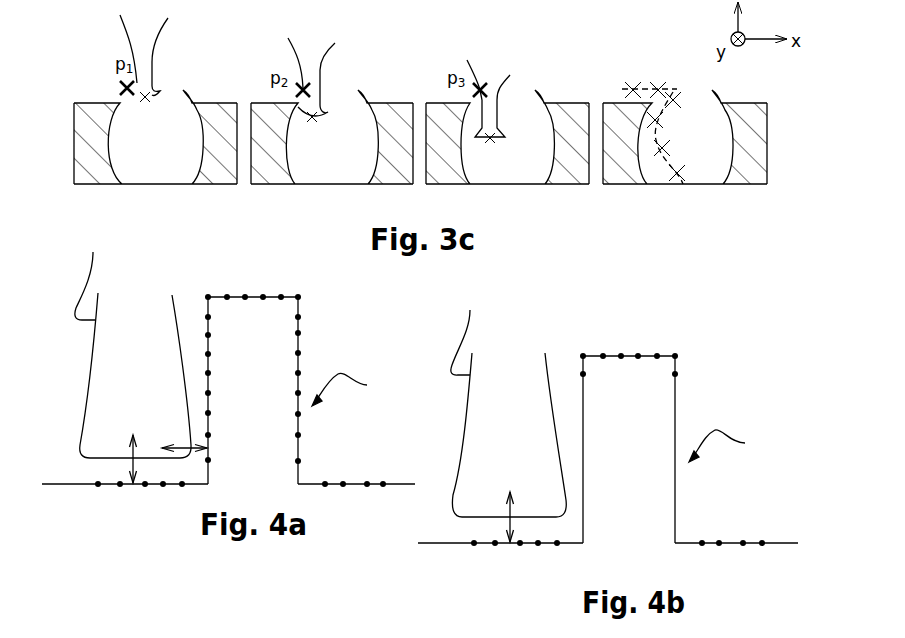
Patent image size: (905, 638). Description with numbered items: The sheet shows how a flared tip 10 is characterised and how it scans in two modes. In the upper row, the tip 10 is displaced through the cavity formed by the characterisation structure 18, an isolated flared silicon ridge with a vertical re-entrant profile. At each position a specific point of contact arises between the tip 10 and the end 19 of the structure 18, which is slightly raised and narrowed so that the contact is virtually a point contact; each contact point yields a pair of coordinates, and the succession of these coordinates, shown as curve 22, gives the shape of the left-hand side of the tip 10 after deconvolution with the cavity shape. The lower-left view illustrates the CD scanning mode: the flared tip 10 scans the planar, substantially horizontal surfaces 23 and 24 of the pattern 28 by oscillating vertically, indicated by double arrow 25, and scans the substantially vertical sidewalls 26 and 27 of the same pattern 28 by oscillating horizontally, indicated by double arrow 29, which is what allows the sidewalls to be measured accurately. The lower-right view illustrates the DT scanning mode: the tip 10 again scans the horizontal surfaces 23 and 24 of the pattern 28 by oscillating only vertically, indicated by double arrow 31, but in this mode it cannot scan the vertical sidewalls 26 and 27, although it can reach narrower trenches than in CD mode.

In FIG. 3C, the flared tip 10 is at (168, 18).
In FIG. 4A, the flared tip 10 is at (133, 345).
In FIG. 4B, the flared tip 10 is at (508, 401).
In FIG. 3C, the characterisation structure 18 is at (74, 130).
In FIG. 3C, the end of the characterisation structure 19 is at (125, 88).
In FIG. 3C, the curve 22 is at (672, 92).
In FIG. 4A, the horizontal surface 23 is at (68, 484).
In FIG. 4B, the horizontal surface 23 is at (452, 543).
In FIG. 4A, the horizontal surface 24 is at (273, 297).
In FIG. 4B, the horizontal surface 24 is at (650, 356).
In FIG. 4A, the double arrow 25 is at (128, 452).
In FIG. 4A, the sidewall 26 is at (208, 340).
In FIG. 4B, the sidewall 26 is at (583, 397).
In FIG. 4A, the sidewall 27 is at (298, 345).
In FIG. 4B, the sidewall 27 is at (675, 403).
In FIG. 4A, the pattern 28 is at (353, 389).
In FIG. 4B, the pattern 28 is at (729, 446).
In FIG. 4A, the double arrow 29 is at (190, 446).
In FIG. 4B, the double arrow 31 is at (500, 508).